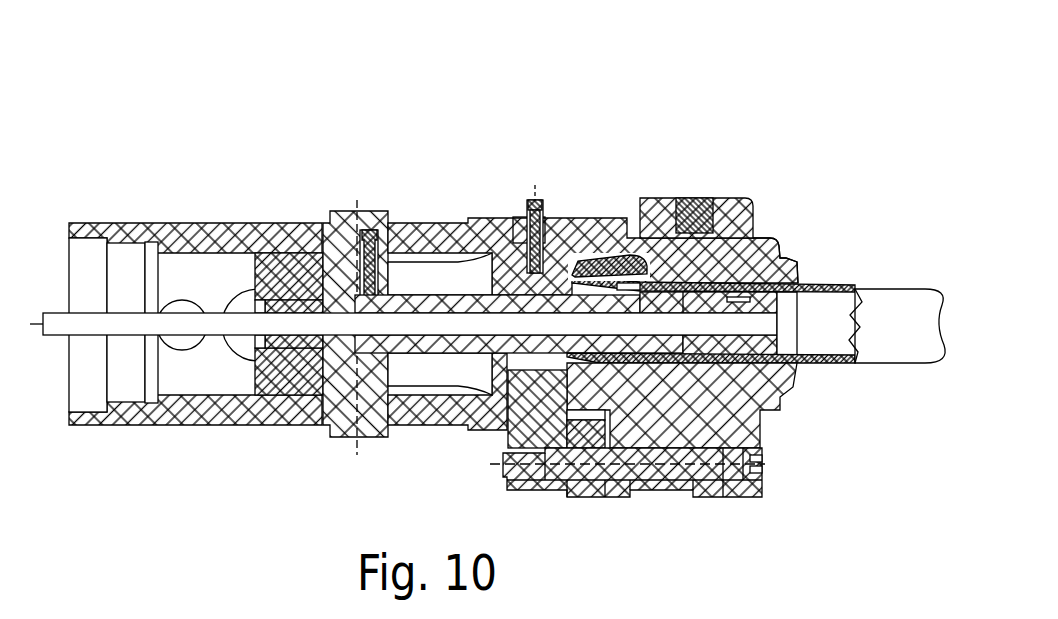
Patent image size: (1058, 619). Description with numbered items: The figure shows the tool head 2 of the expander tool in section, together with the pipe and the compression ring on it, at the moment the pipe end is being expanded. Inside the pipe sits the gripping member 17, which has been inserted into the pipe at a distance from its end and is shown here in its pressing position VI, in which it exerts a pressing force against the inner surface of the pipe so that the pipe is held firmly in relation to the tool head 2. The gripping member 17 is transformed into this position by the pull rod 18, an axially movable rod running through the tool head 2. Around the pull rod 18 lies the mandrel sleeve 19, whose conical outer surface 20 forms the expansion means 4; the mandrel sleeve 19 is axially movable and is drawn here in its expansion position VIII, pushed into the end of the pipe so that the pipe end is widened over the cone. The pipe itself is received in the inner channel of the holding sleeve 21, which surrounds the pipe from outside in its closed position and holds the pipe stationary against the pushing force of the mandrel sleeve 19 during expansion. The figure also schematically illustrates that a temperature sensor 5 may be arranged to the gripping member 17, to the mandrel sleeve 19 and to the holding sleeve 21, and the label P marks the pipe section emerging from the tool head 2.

The tool head 2 is at (626, 82).
The expansion means 4 is at (553, 277).
The temperature sensor 5 is at (641, 236).
The gripping member 17 is at (780, 243).
The pull rod 18 is at (132, 330).
The mandrel sleeve 19 is at (583, 255).
The conical outer surface 20 is at (615, 257).
The holding sleeve 21 is at (760, 390).
The cable P is at (878, 292).
The pressing position VI is at (775, 200).
The expansion position VIII is at (549, 280).